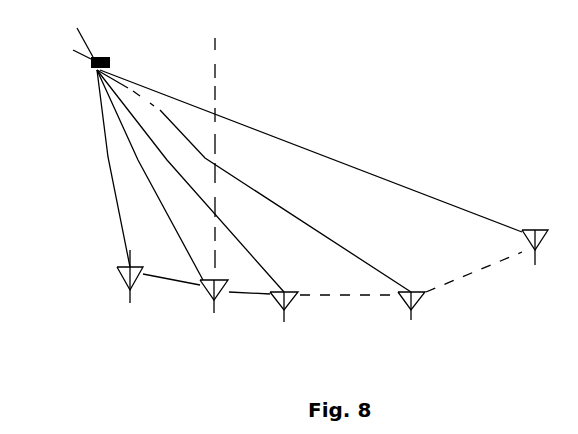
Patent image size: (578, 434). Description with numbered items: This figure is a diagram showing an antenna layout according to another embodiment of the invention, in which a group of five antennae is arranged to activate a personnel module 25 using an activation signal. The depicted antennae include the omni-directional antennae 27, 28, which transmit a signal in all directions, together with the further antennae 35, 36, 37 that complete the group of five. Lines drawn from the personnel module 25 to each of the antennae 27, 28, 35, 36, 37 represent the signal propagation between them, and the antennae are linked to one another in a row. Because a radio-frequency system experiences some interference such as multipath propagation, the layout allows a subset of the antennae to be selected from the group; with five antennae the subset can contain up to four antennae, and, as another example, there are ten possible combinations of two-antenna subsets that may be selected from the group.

The personnel module 25 is at (99, 48).
The omni-directional antenna 27 is at (128, 292).
The omni-directional antenna 28 is at (214, 312).
The third antenna 35 is at (287, 322).
The fourth antenna 36 is at (411, 317).
The fifth antenna 37 is at (535, 260).